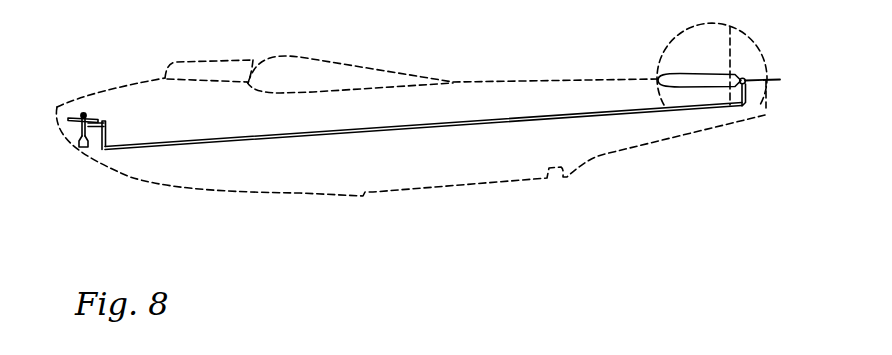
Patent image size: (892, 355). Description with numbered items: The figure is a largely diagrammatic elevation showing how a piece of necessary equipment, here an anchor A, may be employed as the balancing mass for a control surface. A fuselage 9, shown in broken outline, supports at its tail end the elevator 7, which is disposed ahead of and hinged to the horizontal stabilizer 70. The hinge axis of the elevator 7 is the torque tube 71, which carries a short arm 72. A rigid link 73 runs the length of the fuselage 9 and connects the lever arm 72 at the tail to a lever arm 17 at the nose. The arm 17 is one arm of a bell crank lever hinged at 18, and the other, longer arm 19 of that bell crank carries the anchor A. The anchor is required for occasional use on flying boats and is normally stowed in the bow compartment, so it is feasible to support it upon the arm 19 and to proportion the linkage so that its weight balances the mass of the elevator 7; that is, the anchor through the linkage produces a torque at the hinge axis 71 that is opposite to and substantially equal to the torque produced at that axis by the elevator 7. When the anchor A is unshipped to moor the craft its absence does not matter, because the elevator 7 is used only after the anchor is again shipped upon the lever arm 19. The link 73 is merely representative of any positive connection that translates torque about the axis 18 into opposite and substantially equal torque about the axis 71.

The elevator 7 is at (767, 79).
The fuselage 9 is at (515, 85).
The arm 17 is at (105, 137).
The hinge axis 18 is at (106, 121).
The arm 19 is at (95, 128).
The horizontal stabilizer 70 is at (693, 76).
The torque tube 71 is at (745, 78).
The arm 72 is at (744, 98).
The link 73 is at (500, 120).
The anchor A is at (80, 136).